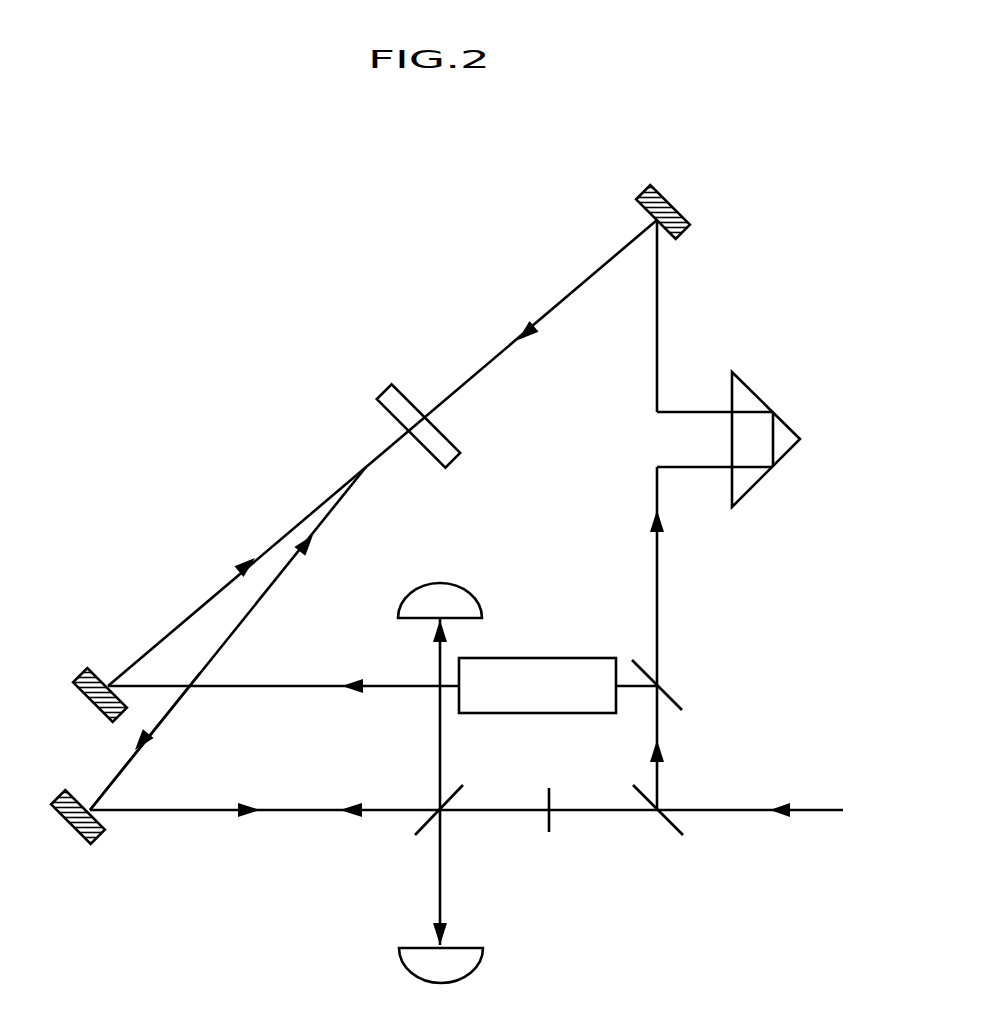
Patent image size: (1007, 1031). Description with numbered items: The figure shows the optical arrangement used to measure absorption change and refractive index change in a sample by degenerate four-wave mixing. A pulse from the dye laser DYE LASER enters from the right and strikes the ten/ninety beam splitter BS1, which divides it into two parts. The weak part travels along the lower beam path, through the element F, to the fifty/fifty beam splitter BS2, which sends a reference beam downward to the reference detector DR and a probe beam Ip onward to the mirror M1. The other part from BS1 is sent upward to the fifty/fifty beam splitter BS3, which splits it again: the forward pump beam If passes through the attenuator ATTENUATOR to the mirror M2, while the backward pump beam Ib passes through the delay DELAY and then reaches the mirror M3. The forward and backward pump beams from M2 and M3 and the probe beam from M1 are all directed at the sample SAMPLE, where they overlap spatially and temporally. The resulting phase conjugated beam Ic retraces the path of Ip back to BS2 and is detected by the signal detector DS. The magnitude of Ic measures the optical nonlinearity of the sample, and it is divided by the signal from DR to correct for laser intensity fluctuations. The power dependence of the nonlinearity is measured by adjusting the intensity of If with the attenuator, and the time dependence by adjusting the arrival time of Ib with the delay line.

The mirror M1 is at (68, 820).
The mirror M2 is at (89, 699).
The mirror M3 is at (669, 209).
The 10/90 beam splitter BS1 is at (705, 829).
The 50/50 beam splitter BS2 is at (384, 829).
The 50/50 beam splitter BS3 is at (715, 685).
The filter F is at (548, 828).
The signal detector DS is at (440, 602).
The reference detector DR is at (441, 967).
The sample SAMPLE is at (469, 428).
The delay DELAY is at (747, 440).
The attenuator ATTENUATOR is at (537, 685).
The dye laser DYE LASER is at (836, 781).
The backward pump beam Ib is at (537, 321).
The forward pump beam If is at (263, 554).
The probe beam Ip is at (228, 638).
The phase conjugated beam Ic is at (145, 741).